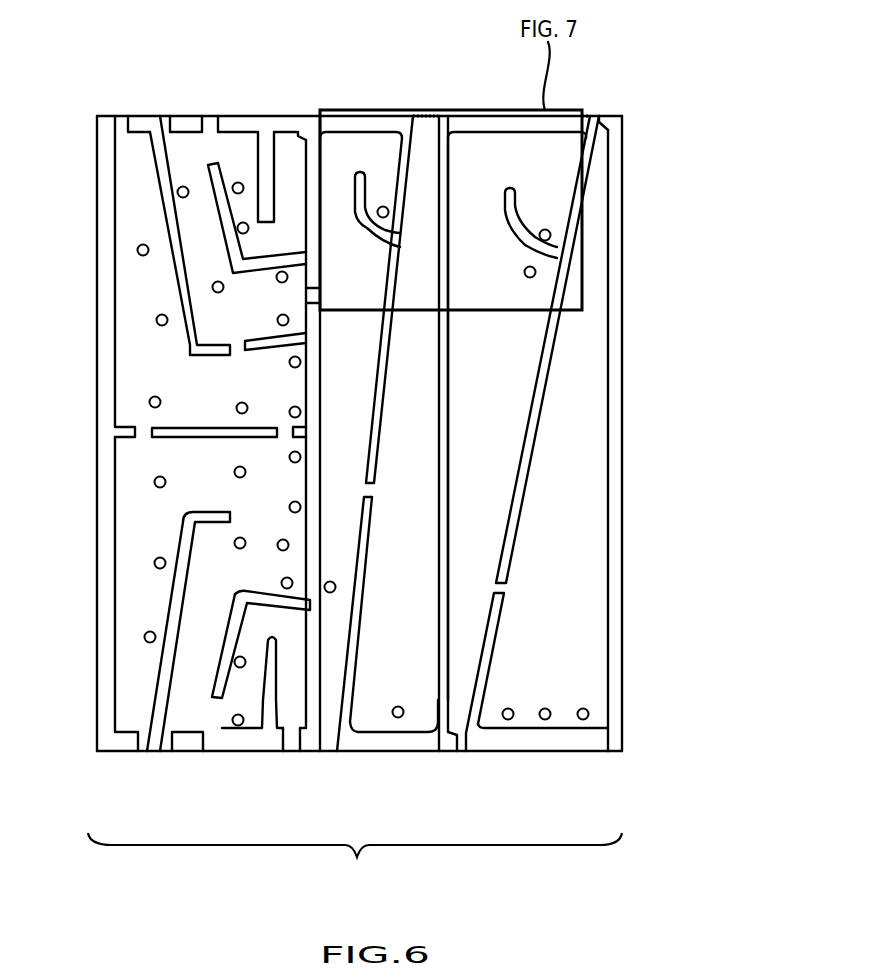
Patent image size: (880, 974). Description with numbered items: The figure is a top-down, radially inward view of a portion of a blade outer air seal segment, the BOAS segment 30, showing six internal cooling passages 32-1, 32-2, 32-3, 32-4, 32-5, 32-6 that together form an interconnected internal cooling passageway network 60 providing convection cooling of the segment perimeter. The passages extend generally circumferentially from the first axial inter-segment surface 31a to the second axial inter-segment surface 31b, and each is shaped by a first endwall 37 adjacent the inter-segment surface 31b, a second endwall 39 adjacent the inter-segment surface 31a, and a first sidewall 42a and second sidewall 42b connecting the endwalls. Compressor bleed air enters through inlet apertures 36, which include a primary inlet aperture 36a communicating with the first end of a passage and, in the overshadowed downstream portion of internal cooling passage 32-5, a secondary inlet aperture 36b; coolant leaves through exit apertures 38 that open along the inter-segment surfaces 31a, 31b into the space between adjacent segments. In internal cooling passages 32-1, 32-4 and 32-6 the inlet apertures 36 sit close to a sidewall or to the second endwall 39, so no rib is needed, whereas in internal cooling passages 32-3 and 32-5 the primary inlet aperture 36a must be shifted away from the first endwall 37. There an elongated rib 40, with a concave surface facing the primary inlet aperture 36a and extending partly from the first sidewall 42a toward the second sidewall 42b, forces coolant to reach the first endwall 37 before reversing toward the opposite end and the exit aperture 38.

The BOAS segment 30 is at (698, 632).
The first axial inter-segment surface 31a is at (357, 753).
The second axial inter-segment surface 31b is at (365, 112).
The internal cooling passage 32-1 is at (218, 391).
The internal cooling passage 32-2 is at (212, 416).
The internal cooling passage 32-3 is at (372, 395).
The internal cooling passage 32-4 is at (420, 647).
The internal cooling passage 32-5 is at (507, 395).
The internal cooling passage 32-6 is at (574, 647).
The inlet apertures 36 is at (138, 249).
The primary inlet aperture 36a is at (389, 212).
The secondary inlet aperture 36b is at (536, 273).
The first endwall 37 is at (386, 114).
The exit apertures 38 is at (122, 114).
The second endwall 39 is at (597, 742).
The elongated rib 40 is at (353, 222).
The first sidewall 42a is at (366, 504).
The second sidewall 42b is at (444, 498).
The internal cooling passageway network 60 is at (355, 860).